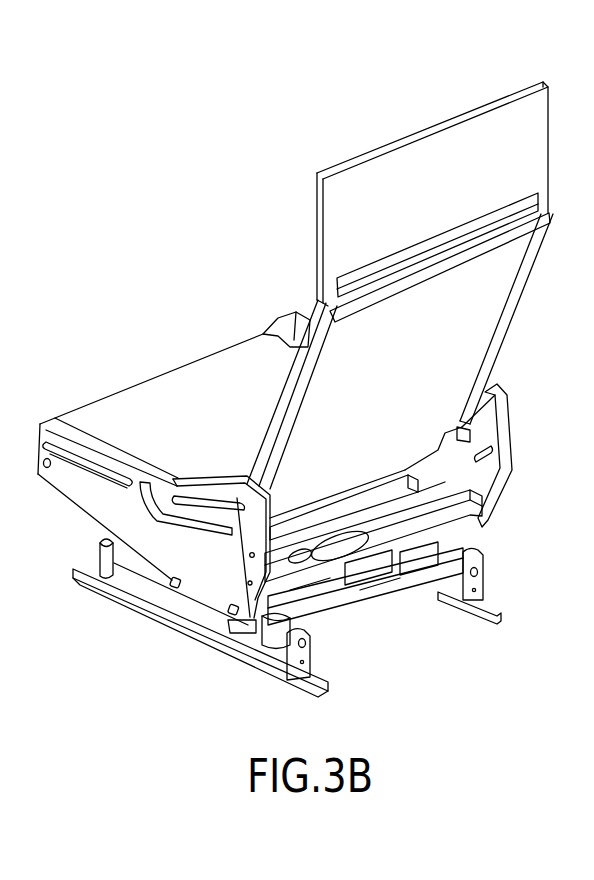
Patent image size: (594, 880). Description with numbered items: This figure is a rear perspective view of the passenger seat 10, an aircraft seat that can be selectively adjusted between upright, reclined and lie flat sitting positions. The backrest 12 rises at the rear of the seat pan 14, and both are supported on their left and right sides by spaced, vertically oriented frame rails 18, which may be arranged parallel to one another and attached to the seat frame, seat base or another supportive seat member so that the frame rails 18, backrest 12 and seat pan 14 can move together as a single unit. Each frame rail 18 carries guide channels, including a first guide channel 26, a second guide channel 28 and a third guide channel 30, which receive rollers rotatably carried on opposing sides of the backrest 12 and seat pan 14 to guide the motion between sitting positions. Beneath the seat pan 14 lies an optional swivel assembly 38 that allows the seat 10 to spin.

The passenger seat 10 is at (428, 72).
The backrest 12 is at (488, 278).
The seat pan 14 is at (193, 390).
The frame rail 18 is at (155, 568).
The first guide channel 26 is at (82, 462).
The second guide channel 28 is at (190, 527).
The third guide channel 30 is at (250, 618).
The swivel assembly 38 is at (363, 580).